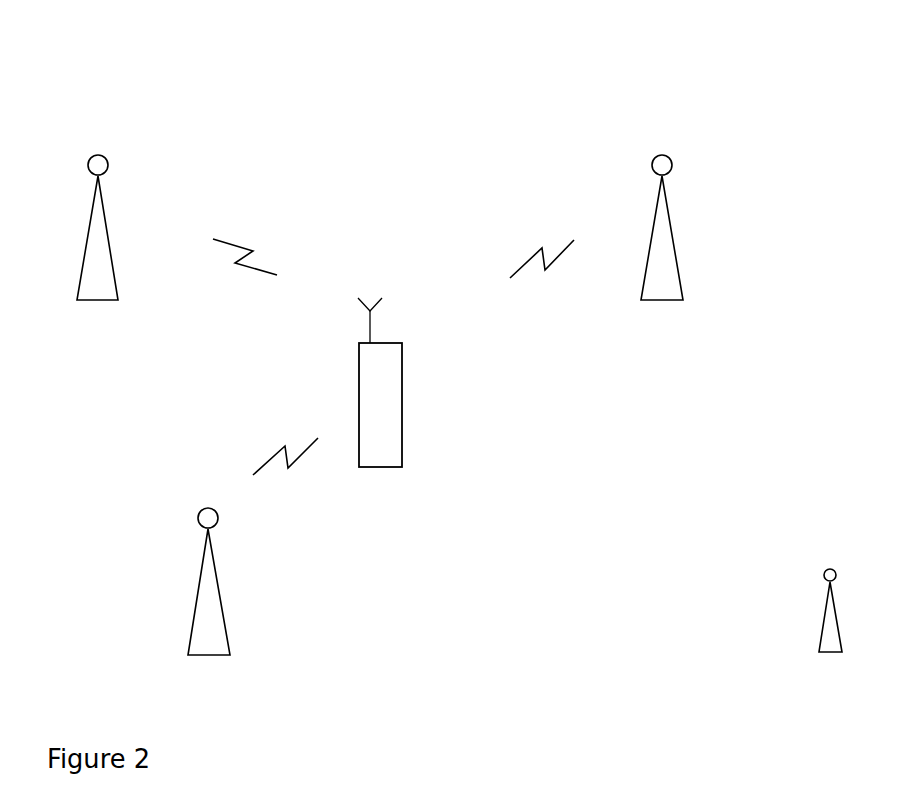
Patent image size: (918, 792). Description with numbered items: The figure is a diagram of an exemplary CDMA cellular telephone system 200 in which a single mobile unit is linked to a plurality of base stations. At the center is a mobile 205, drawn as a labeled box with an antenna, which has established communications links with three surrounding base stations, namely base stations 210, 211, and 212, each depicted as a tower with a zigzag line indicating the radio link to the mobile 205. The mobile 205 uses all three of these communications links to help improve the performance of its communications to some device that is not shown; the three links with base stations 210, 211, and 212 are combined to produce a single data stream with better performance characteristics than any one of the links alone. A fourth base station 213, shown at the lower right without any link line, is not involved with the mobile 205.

The CDMA cellular telephone system 200 is at (130, 87).
The mobile 205 is at (402, 373).
The base station 210 is at (93, 208).
The base station 211 is at (203, 572).
The base station 212 is at (655, 207).
The fourth base station 213 is at (822, 610).